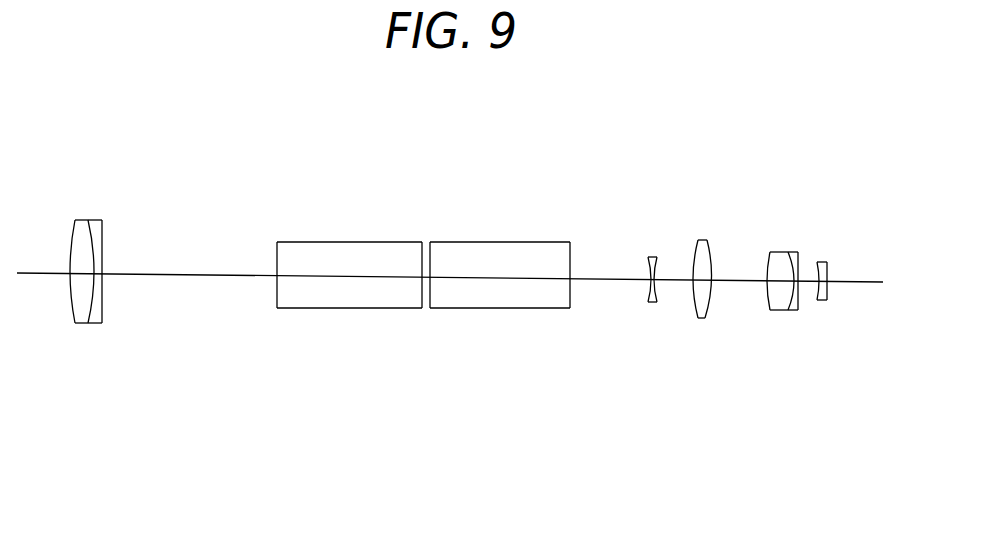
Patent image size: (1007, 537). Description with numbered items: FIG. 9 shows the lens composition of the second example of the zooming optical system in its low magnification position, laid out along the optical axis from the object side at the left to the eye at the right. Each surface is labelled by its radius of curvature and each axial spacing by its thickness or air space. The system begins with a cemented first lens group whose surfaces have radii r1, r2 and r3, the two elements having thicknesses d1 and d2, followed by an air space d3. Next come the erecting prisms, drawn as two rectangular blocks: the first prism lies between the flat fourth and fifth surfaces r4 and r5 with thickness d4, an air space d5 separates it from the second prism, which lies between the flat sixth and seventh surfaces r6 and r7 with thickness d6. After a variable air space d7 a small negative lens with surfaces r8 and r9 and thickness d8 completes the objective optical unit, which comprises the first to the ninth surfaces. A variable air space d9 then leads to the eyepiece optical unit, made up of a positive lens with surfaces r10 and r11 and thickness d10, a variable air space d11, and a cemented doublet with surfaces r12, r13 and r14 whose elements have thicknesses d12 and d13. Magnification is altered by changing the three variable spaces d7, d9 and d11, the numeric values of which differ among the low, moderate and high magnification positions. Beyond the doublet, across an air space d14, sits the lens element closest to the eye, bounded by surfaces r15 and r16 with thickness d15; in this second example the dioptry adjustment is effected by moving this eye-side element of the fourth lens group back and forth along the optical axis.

The first lens surface radius of curvature r1 is at (74, 222).
The second lens surface radius of curvature r2 is at (88, 222).
The third lens surface radius of curvature r3 is at (103, 222).
The fourth surface radius of curvature r4 is at (277, 250).
The fifth surface radius of curvature r5 is at (422, 244).
The sixth surface radius of curvature r6 is at (432, 244).
The seventh surface radius of curvature r7 is at (570, 250).
The eighth lens surface radius of curvature r8 is at (649, 257).
The ninth lens surface radius of curvature r9 is at (657, 257).
The tenth lens surface radius of curvature r10 is at (698, 240).
The eleventh lens surface radius of curvature r11 is at (708, 241).
The twelfth lens surface radius of curvature r12 is at (770, 252).
The thirteenth lens surface radius of curvature r13 is at (789, 252).
The fourteenth lens surface radius of curvature r14 is at (798, 254).
The fifteenth lens surface radius of curvature r15 is at (819, 263).
The sixteenth lens surface radius of curvature r16 is at (828, 263).
The first lens thickness d1 is at (82, 277).
The second lens thickness d2 is at (100, 303).
The air space after third surface d3 is at (190, 277).
The first erecting prism thickness d4 is at (350, 279).
The air space between prisms d5 is at (424, 281).
The second erecting prism thickness d6 is at (500, 279).
The variable air space after seventh surface d7 is at (610, 282).
The negative lens thickness d8 is at (652, 283).
The variable air space after ninth surface d9 is at (677, 282).
The eyepiece positive lens thickness d10 is at (702, 319).
The variable air space after eleventh surface d11 is at (740, 283).
The doublet first element thickness d12 is at (780, 312).
The doublet second element thickness d13 is at (799, 284).
The variable air space after fourteenth surface d14 is at (812, 302).
The eye-side lens thickness d15 is at (825, 302).